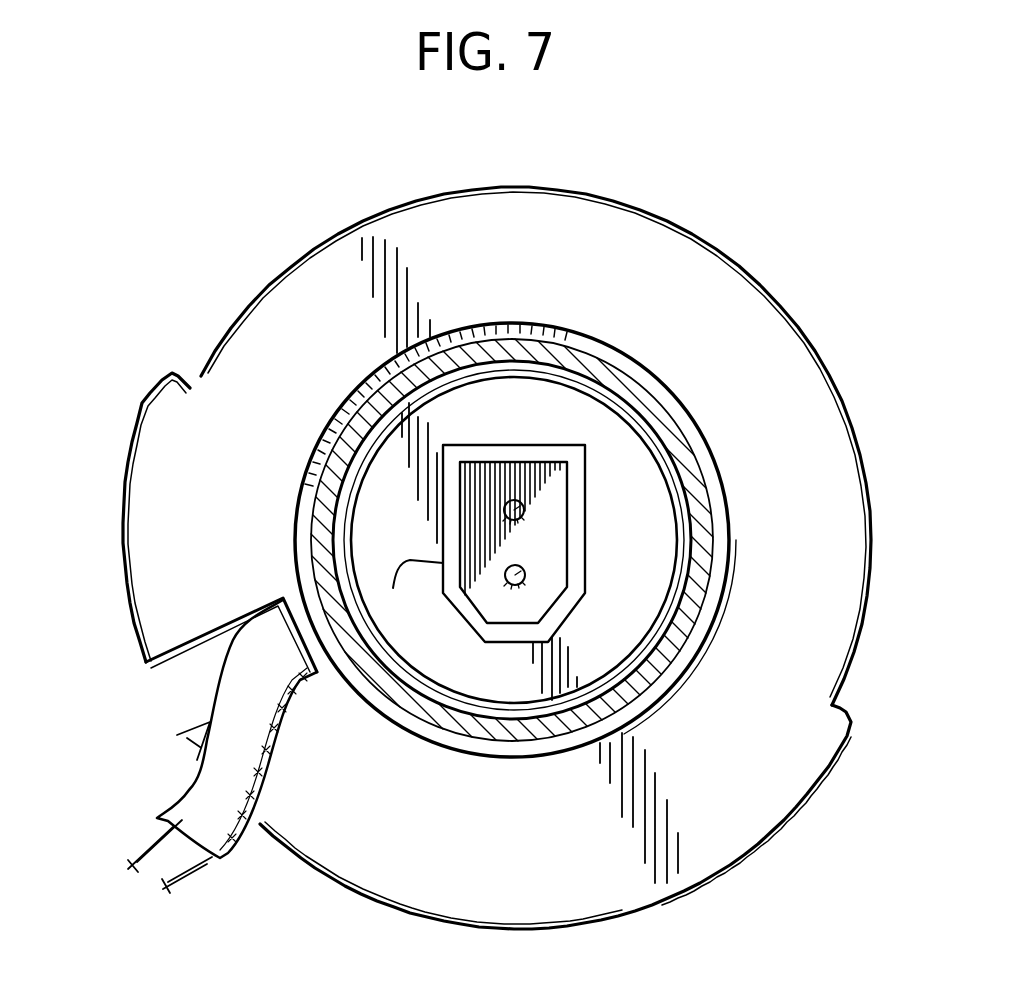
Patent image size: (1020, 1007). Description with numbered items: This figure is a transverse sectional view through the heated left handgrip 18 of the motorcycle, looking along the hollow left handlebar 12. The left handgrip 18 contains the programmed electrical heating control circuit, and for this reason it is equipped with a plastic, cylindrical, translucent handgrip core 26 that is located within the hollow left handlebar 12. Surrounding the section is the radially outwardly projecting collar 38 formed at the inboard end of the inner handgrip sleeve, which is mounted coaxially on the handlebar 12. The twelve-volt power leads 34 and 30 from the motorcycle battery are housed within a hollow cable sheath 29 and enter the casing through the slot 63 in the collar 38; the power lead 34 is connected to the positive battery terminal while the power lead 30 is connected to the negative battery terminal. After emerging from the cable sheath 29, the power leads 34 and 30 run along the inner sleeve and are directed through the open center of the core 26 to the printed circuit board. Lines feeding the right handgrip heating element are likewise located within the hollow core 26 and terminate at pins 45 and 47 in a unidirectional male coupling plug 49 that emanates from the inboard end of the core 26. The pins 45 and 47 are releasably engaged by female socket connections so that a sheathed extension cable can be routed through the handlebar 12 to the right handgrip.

The left handlebar 12 is at (714, 506).
The left handgrip 18 is at (735, 892).
The handgrip core 26 is at (543, 417).
The cable sheath 29 is at (207, 782).
The power lead 30 is at (180, 882).
The power lead 34 is at (157, 847).
The collar 38 is at (697, 267).
The pin 45 is at (517, 505).
The pin 47 is at (517, 575).
The male coupling plug 49 is at (412, 588).
The slot 63 is at (177, 662).